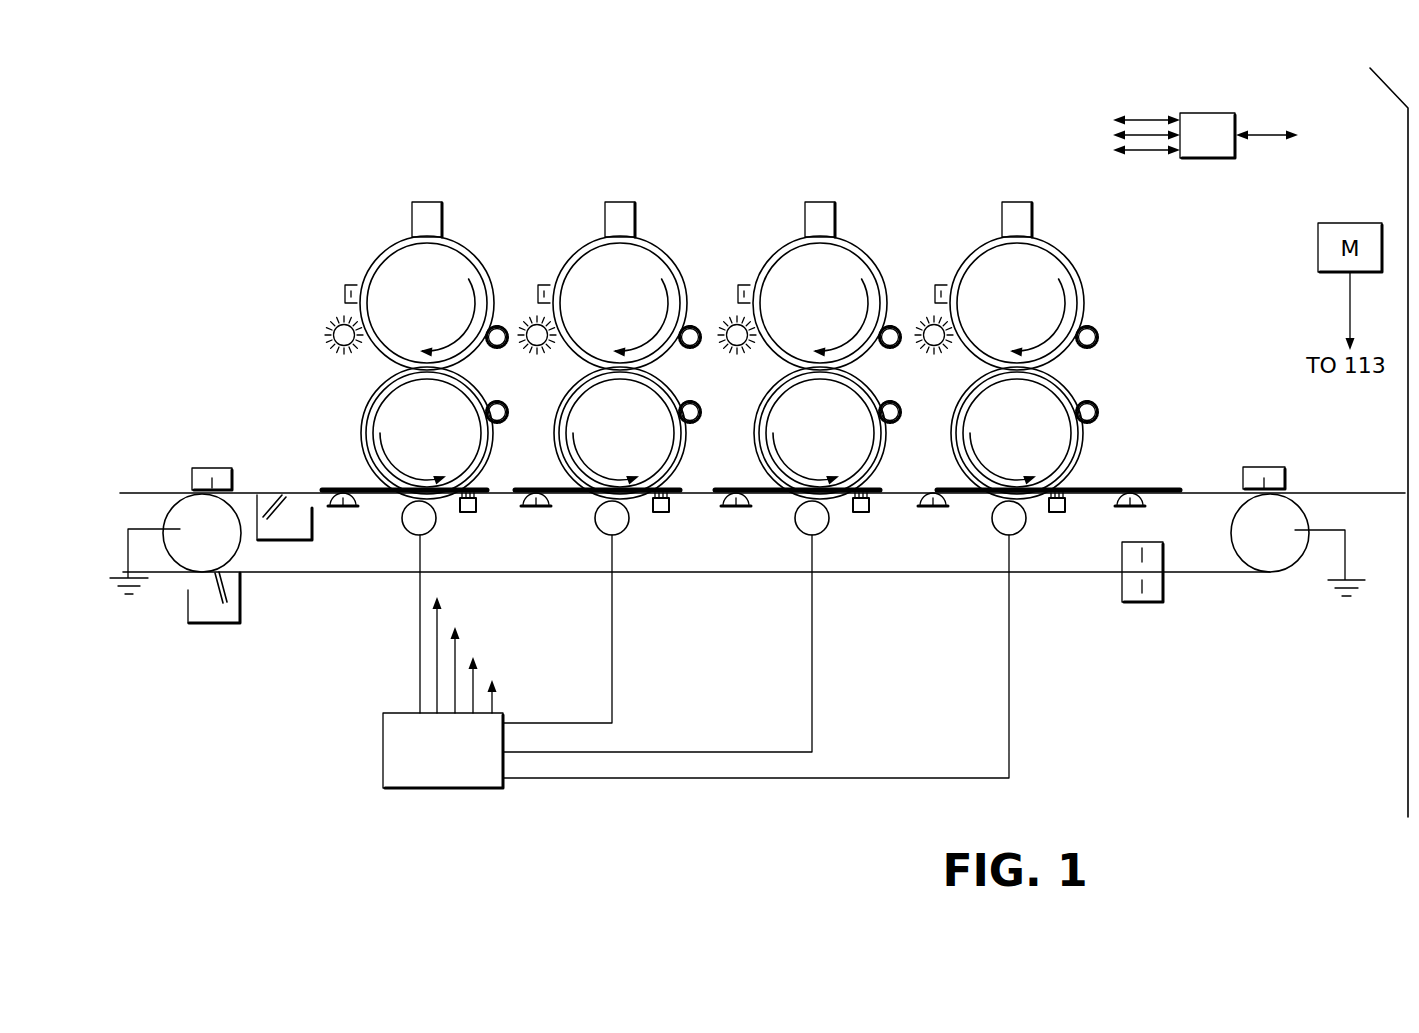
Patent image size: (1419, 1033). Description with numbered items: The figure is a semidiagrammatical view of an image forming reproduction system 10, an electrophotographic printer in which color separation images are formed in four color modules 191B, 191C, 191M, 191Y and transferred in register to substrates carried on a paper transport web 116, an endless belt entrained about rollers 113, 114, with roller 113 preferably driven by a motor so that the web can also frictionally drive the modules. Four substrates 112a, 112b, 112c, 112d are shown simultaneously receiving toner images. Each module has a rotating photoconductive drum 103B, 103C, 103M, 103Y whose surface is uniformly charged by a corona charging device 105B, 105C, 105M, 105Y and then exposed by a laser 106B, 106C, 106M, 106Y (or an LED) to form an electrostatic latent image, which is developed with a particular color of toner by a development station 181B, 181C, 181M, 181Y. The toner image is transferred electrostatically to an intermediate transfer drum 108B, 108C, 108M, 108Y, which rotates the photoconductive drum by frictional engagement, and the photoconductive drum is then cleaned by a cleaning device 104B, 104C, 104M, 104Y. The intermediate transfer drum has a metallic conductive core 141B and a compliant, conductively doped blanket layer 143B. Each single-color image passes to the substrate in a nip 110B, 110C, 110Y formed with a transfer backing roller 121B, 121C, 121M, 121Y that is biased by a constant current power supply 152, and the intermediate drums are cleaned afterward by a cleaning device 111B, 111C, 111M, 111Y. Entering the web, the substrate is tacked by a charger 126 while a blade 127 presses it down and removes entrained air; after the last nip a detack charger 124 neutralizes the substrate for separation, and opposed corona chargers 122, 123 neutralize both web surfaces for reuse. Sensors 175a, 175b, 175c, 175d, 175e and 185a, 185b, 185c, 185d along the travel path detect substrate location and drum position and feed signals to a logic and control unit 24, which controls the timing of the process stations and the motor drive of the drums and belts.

The image forming reproduction system 10 is at (915, 115).
The logic and control unit 24 is at (1207, 113).
The primary image-forming member drum 103B is at (427, 303).
The primary image-forming member drum 103C is at (620, 303).
The primary image-forming member drum 103M is at (820, 303).
The primary image-forming member drum 103Y is at (1017, 303).
The cleaning device 104B is at (340, 322).
The cleaning device 104C is at (536, 316).
The cleaning device 104M is at (736, 316).
The cleaning device 104Y is at (933, 316).
The corona charging device 105B is at (345, 286).
The corona charging device 105C is at (546, 285).
The corona charging device 105M is at (746, 285).
The corona charging device 105Y is at (943, 285).
The laser 106B is at (427, 202).
The laser 106C is at (620, 202).
The laser 106M is at (820, 202).
The laser 106Y is at (1017, 202).
The intermediate transfer drum 108B is at (427, 433).
The intermediate transfer drum 108C is at (620, 433).
The intermediate transfer drum 108M is at (820, 433).
The intermediate transfer drum 108Y is at (1017, 433).
The nip 110B is at (370, 480).
The nip 110C is at (566, 484).
The nip 110Y is at (1078, 472).
The cleaning device 111B is at (497, 402).
The cleaning device 111C is at (690, 402).
The cleaning device 111M is at (890, 402).
The cleaning device 111Y is at (1087, 402).
The substrate 112a is at (490, 470).
The substrate 112b is at (697, 445).
The substrate 112c is at (886, 470).
The substrate 112d is at (1100, 468).
The roller 113 is at (1304, 525).
The roller 114 is at (165, 521).
The paper transport web 116 is at (1186, 485).
The transfer backing roller 121B is at (417, 522).
The transfer backing roller 121C is at (611, 522).
The transfer backing roller 121M is at (811, 522).
The transfer backing roller 121Y is at (1008, 522).
The corona charger 122 is at (1122, 592).
The corona charger 123 is at (1163, 557).
The detack charger 124 is at (1264, 467).
The charger 126 is at (212, 468).
The blade 127 is at (180, 458).
The conductive core 141B is at (372, 440).
The compliant blanket layer 143B is at (380, 386).
The constant current power supply 152 is at (442, 788).
The sensor 175a is at (338, 511).
The sensor 175b is at (531, 511).
The sensor 175c is at (731, 511).
The sensor 175d is at (928, 511).
The sensor 175e is at (1125, 511).
The development station 181B is at (495, 348).
The development station 181C is at (688, 348).
The development station 181M is at (888, 348).
The development station 181Y is at (1085, 348).
The sensor 185a is at (468, 512).
The sensor 185b is at (661, 512).
The sensor 185c is at (861, 512).
The sensor 185d is at (1057, 512).
The color module 191B is at (377, 220).
The color module 191C is at (570, 220).
The color module 191M is at (770, 220).
The color module 191Y is at (967, 220).